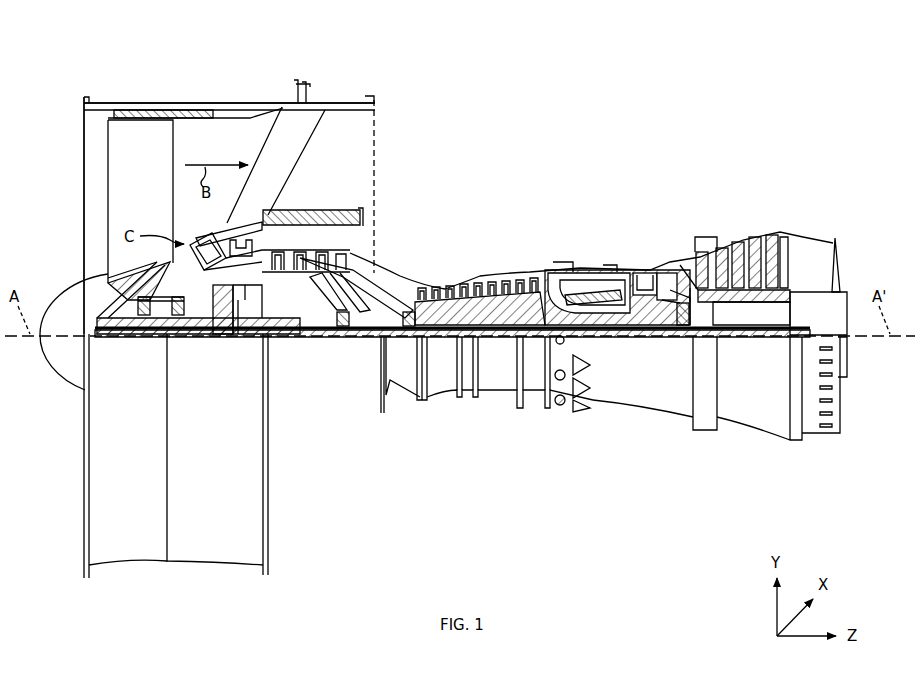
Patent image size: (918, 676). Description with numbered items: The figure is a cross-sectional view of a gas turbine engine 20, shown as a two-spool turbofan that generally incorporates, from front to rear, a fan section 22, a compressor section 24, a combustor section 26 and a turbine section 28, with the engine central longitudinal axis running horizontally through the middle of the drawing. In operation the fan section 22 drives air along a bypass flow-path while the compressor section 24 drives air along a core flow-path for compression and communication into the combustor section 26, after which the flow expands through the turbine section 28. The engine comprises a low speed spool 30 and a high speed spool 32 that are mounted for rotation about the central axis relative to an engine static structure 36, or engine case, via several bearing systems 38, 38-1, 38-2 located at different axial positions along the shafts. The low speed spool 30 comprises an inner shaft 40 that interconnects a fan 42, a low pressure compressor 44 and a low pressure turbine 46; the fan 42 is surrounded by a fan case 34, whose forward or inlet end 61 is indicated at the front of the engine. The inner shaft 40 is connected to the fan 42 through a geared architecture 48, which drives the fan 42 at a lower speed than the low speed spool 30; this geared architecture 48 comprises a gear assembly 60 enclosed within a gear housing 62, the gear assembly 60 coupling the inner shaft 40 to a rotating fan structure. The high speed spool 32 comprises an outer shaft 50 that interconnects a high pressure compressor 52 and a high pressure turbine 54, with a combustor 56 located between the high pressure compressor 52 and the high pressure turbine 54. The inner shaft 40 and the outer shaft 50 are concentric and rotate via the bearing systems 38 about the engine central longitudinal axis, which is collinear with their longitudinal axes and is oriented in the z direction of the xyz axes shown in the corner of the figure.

The gas turbine engine 20 is at (628, 131).
The fan section 22 is at (292, 48).
The compressor section 24 is at (270, 184).
The combustor section 26 is at (632, 184).
The turbine section 28 is at (793, 184).
The low speed spool 30 is at (500, 350).
The high speed spool 32 is at (524, 301).
The fan case 34 is at (138, 103).
The engine static structure 36 is at (655, 395).
The bearing system 38 is at (668, 330).
The bearing system 38-1 is at (150, 319).
The bearing system 38-2 is at (345, 322).
The inner shaft 40 is at (398, 350).
The fan 42 is at (106, 255).
The low pressure compressor 44 is at (339, 252).
The low pressure turbine 46 is at (740, 244).
The geared architecture 48 is at (236, 345).
The outer shaft 50 is at (585, 325).
The high pressure compressor 52 is at (484, 308).
The high pressure turbine 54 is at (646, 272).
The combustor 56 is at (584, 287).
The gear assembly 60 is at (242, 318).
The forward end 61 is at (84, 151).
The gear housing 62 is at (238, 290).